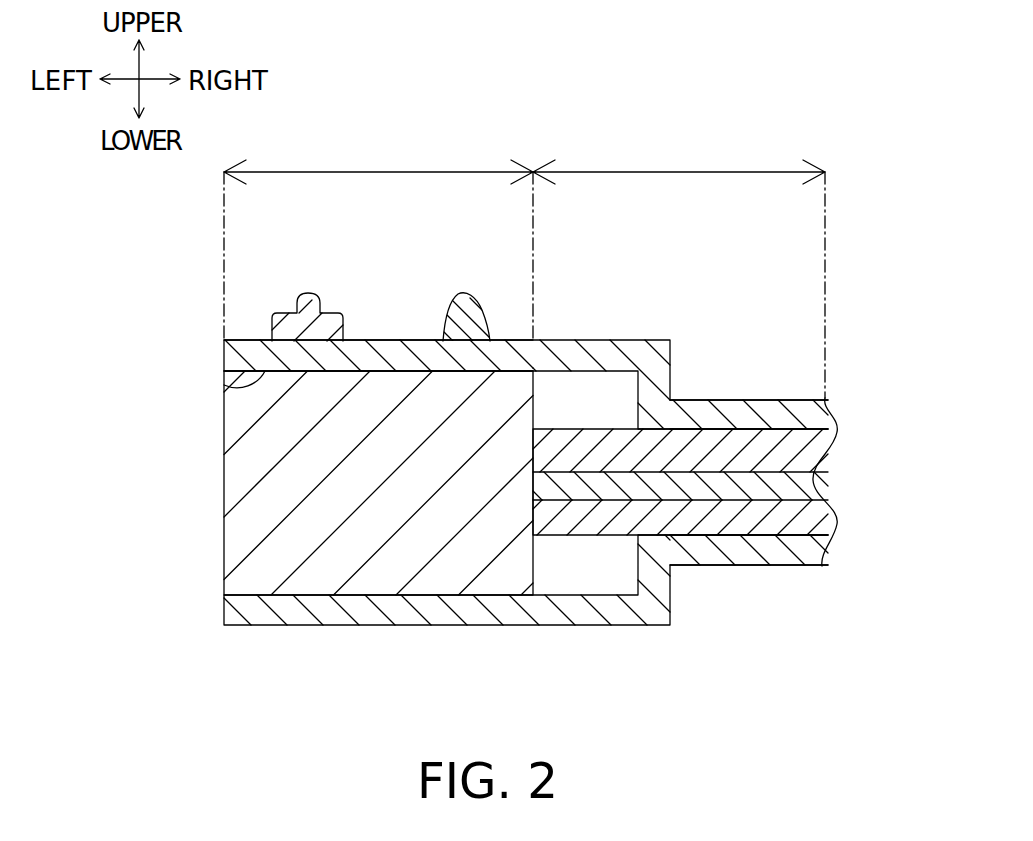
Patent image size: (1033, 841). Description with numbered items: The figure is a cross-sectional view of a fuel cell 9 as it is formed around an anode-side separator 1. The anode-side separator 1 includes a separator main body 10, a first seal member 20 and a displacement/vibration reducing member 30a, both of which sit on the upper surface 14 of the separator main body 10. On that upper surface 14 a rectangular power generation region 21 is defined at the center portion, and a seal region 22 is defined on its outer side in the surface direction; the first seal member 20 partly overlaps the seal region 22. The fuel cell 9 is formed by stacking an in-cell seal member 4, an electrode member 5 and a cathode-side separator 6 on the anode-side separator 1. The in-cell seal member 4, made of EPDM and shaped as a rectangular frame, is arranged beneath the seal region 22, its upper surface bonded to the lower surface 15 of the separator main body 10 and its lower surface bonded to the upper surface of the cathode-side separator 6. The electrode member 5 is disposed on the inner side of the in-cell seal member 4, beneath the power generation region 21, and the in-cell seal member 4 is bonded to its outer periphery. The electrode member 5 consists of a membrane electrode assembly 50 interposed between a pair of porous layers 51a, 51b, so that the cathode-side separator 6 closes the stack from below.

The anode-side separator 1 is at (705, 410).
The in-cell seal member 4 is at (240, 456).
The electrode member 5 is at (739, 482).
The cathode-side separator 6 is at (758, 550).
The fuel cell 9 is at (874, 262).
The separator main body 10 is at (627, 340).
The upper surface 14 is at (545, 340).
The lower surface 15 is at (224, 385).
The first seal member 20 is at (303, 296).
The power generation region 21 is at (678, 172).
The seal region 22 is at (380, 172).
The displacement/vibration reducing member 30a is at (462, 292).
The membrane electrode assembly (MEA) 50 is at (797, 487).
The porous layer 51a is at (798, 440).
The porous layer 51b is at (719, 517).